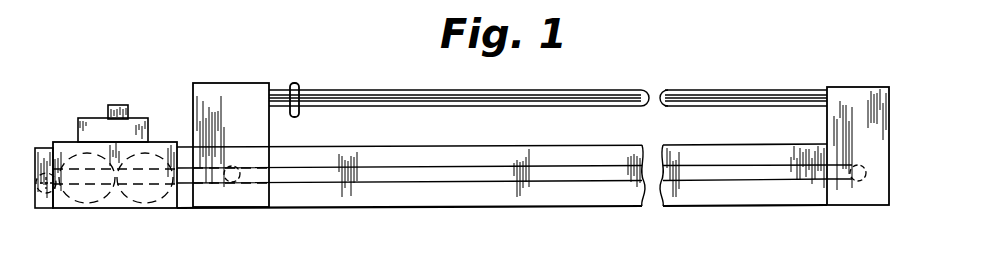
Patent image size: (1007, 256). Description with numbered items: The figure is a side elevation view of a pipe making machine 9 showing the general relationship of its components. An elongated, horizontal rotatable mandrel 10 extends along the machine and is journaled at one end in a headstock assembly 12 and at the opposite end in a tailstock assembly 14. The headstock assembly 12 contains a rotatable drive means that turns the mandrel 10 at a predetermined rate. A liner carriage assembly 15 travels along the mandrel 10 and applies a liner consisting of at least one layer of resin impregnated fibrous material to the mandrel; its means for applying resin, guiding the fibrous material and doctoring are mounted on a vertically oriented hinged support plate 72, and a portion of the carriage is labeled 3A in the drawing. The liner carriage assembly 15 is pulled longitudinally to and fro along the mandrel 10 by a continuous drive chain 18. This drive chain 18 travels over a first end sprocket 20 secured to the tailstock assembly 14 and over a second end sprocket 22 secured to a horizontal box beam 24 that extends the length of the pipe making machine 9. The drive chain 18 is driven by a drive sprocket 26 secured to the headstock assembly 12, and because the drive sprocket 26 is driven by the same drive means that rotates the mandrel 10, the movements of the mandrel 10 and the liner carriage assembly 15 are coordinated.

The pipe making machine 9 is at (346, 60).
The mandrel 10 is at (503, 94).
The headstock assembly 12 is at (214, 208).
The tailstock assembly 14 is at (836, 206).
The liner carriage assembly 15 is at (57, 88).
The drive chain 18 is at (453, 182).
The first end sprocket 20 is at (851, 208).
The second end sprocket 22 is at (38, 211).
The horizontal box beam 24 is at (601, 124).
The drive sprocket 26 is at (232, 210).
The housing 3A is at (154, 141).
The hinged support plate 72 is at (117, 108).